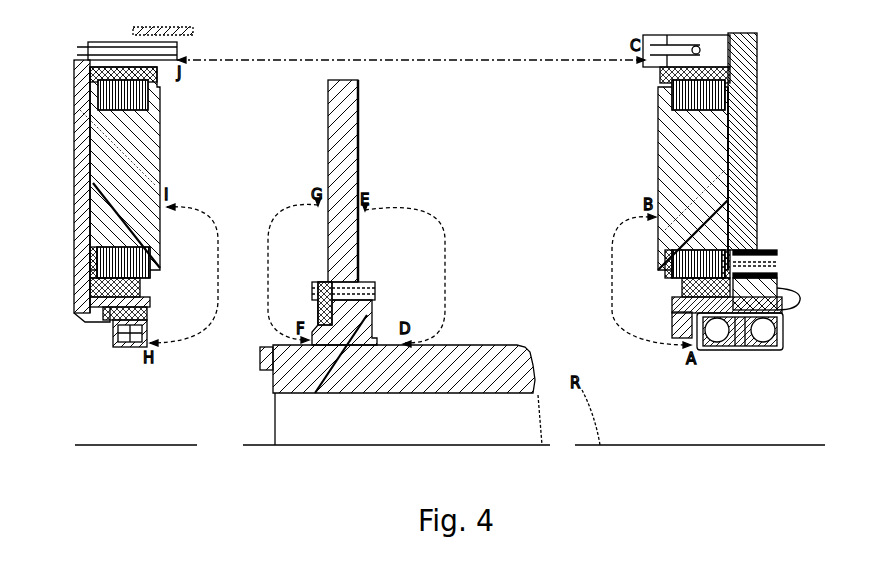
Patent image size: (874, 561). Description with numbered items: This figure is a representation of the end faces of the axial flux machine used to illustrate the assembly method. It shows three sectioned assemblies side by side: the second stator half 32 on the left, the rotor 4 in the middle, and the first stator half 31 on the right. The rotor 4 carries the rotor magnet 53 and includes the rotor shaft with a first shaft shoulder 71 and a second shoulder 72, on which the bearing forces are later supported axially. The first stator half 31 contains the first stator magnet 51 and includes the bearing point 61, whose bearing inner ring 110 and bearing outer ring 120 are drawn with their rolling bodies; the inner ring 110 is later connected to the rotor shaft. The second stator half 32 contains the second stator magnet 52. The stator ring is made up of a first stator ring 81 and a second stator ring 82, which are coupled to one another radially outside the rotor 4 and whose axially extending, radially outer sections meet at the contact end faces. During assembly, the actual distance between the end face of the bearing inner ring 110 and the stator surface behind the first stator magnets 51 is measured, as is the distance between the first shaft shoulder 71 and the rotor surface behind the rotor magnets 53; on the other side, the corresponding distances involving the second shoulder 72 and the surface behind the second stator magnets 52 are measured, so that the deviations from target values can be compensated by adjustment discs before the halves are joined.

The rotor 4 is at (349, 83).
The rotor magnet 53 is at (328, 103).
The second stator magnet 52 is at (162, 152).
The second stator ring 82 is at (103, 53).
The second stator half 32 is at (90, 188).
The first stator ring 81 is at (757, 75).
The first stator half 31 is at (726, 163).
The first stator magnet 51 is at (660, 153).
The bearing outer ring 120 is at (797, 295).
The bearing inner ring 110 is at (710, 348).
The bearing point 61 is at (747, 350).
The first shaft shoulder 71 is at (385, 348).
The second shoulder 72 is at (325, 362).